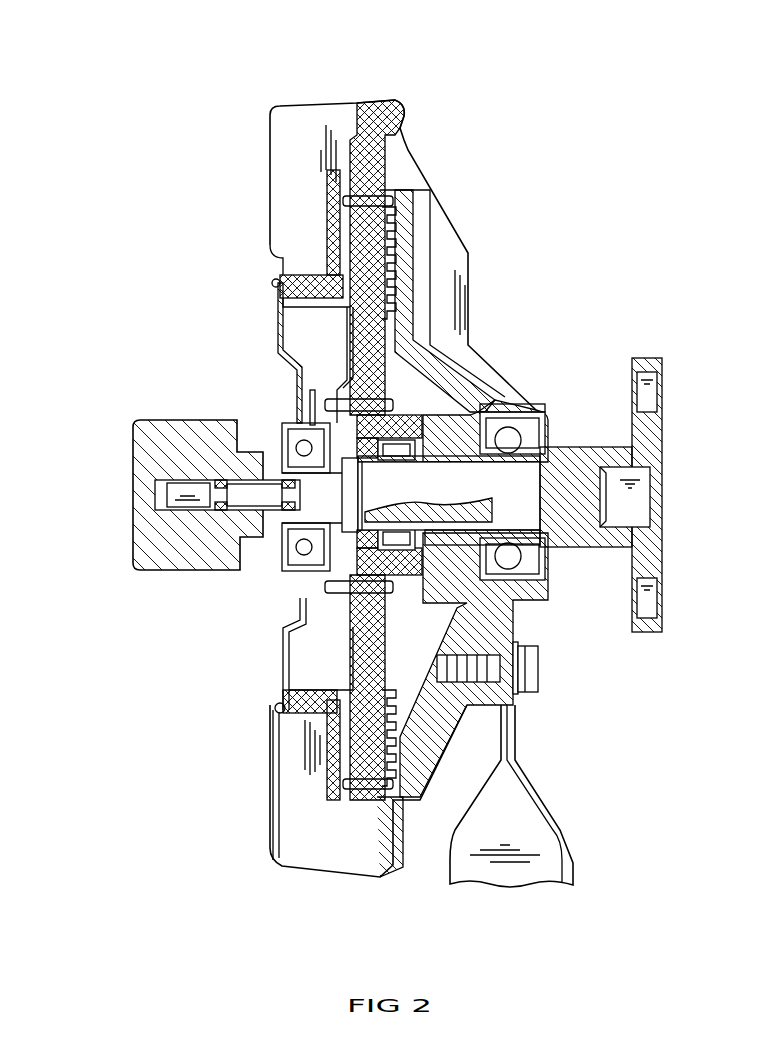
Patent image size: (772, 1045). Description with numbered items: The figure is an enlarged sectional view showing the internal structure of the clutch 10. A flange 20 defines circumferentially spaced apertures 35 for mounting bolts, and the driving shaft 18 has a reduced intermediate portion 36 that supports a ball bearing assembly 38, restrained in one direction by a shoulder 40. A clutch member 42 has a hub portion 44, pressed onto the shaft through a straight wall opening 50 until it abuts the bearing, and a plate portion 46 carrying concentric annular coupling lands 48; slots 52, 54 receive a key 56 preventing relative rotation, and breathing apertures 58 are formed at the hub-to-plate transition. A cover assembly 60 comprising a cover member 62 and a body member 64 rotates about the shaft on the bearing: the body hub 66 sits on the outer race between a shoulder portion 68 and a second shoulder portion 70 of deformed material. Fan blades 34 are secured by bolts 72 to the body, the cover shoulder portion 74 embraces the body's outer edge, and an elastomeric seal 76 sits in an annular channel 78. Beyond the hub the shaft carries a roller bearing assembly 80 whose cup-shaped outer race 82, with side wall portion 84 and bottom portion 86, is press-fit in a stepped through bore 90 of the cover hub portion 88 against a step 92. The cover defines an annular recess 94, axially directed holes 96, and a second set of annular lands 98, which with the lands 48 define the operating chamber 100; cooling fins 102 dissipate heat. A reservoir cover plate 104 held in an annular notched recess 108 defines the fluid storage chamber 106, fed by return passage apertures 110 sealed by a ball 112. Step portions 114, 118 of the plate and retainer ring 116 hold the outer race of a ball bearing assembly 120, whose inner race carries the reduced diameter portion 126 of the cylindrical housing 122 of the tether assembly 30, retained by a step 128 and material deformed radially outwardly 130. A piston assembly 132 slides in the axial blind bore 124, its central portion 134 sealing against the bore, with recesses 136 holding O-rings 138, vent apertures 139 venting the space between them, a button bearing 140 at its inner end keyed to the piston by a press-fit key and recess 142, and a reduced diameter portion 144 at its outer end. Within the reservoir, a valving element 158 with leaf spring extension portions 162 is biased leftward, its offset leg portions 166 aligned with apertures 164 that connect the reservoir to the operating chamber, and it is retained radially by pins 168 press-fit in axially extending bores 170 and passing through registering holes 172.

The clutch 10 is at (566, 258).
The driving shaft 18 is at (600, 510).
The flange 20 is at (645, 358).
The tether assembly 30 is at (108, 398).
The fan blades 34 is at (520, 885).
The apertures 35 is at (655, 400).
The reduced intermediate portion 36 is at (615, 480).
The ball bearing assembly 38 is at (532, 562).
The shoulder 40 is at (565, 450).
The clutch member 42 is at (425, 205).
The hub portion 44 is at (520, 470).
The plate portion 46 is at (414, 196).
The annular coupling lands 48 is at (470, 258).
The straight wall opening 50 is at (532, 440).
The slot 52 is at (414, 555).
The slot 54 is at (520, 590).
The key 56 is at (540, 668).
The breathing apertures 58 is at (475, 715).
The cover assembly 60 is at (357, 98).
The cover member 62 is at (313, 106).
The body member 64 is at (465, 230).
The hub 66 is at (520, 408).
The shoulder portion 68 is at (540, 585).
The second shoulder portion 70 is at (525, 605).
The bolts 72 is at (535, 672).
The shoulder portion 74 is at (395, 857).
The elastomeric seal 76 is at (400, 815).
The annular channel 78 is at (370, 822).
The roller bearing assembly 80 is at (410, 400).
The outer race 82 is at (417, 463).
The side wall portion 84 is at (377, 466).
The bottom portion 86 is at (321, 658).
The hub portion 88 is at (540, 395).
The stepped through bore 90 is at (512, 415).
The step 92 is at (300, 403).
The annular recess 94 is at (340, 795).
The axially directed holes 96 is at (342, 205).
The annular lands 98 is at (342, 280).
The operating chamber 100 is at (342, 240).
The cooling fins 102 is at (275, 778).
The reservoir cover plate 104 is at (278, 288).
The fluid storage chamber 106 is at (333, 338).
The annular notched recess 108 is at (275, 738).
The return passage apertures 110 is at (340, 262).
The ball 112 is at (338, 170).
The step portion 114 is at (288, 565).
The retainer ring 116 is at (296, 625).
The step portion 118 is at (292, 598).
The ball bearing assembly 120 is at (275, 545).
The cylindrical housing 122 is at (135, 432).
The axial blind bore 124 is at (160, 500).
The portion of reduced diameter 126 is at (310, 433).
The step 128 is at (292, 427).
The deformed material 130 is at (310, 412).
The piston assembly 132 is at (262, 475).
The central portion 134 is at (240, 488).
The recesses 136 is at (285, 515).
The O-rings 138 is at (215, 506).
The vent apertures 139 is at (235, 420).
The button bearing 140 is at (152, 572).
The body edge 142 is at (265, 525).
The reduced diameter portion 144 is at (165, 490).
The valving element 158 is at (283, 670).
The leaf spring extension portions 162 is at (345, 676).
The apertures 164 is at (437, 298).
The offset leg portions 166 is at (283, 700).
The pins 168 is at (425, 325).
The axially extending bores 170 is at (420, 357).
The registering holes 172 is at (280, 333).